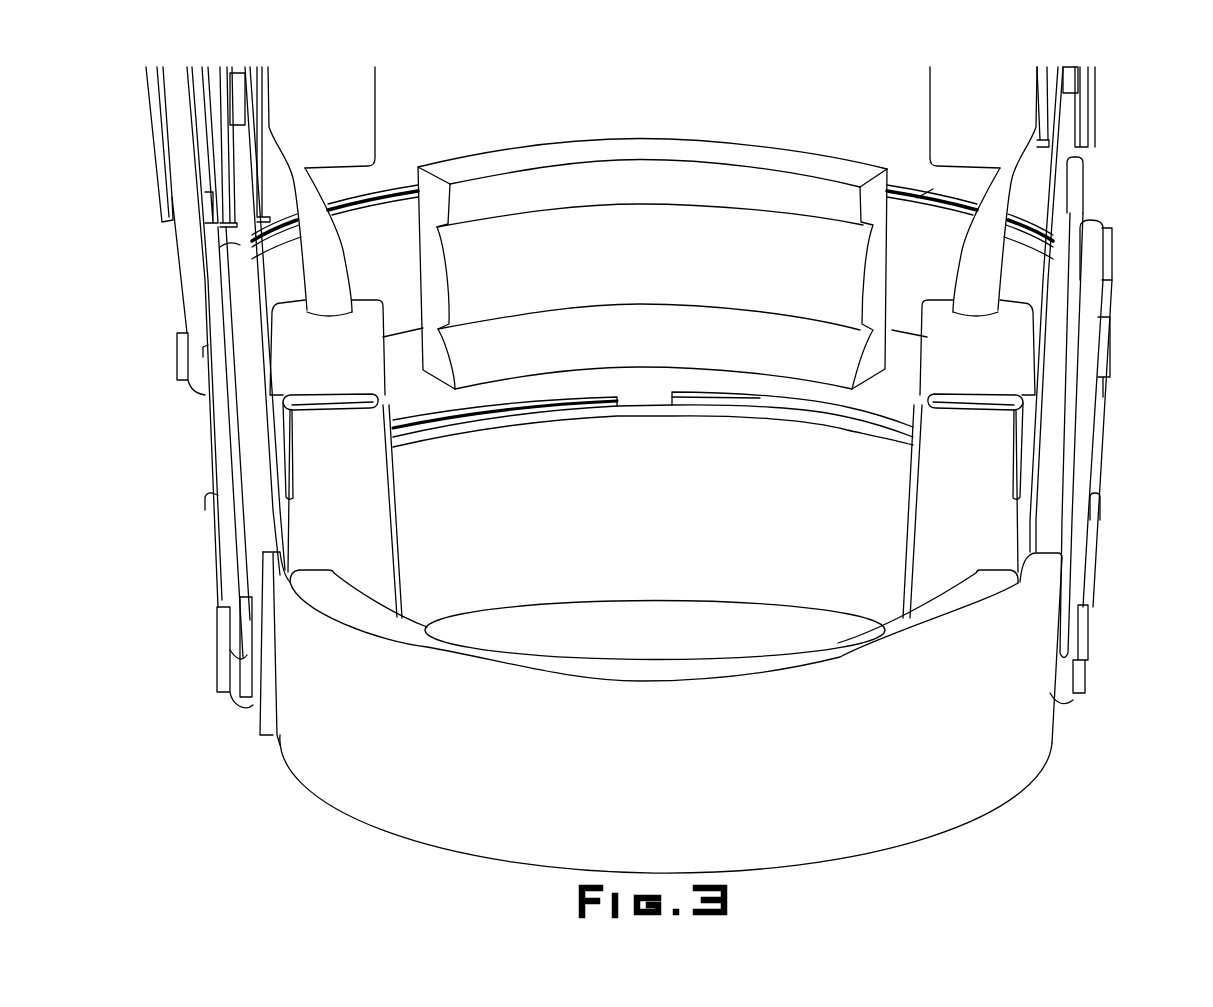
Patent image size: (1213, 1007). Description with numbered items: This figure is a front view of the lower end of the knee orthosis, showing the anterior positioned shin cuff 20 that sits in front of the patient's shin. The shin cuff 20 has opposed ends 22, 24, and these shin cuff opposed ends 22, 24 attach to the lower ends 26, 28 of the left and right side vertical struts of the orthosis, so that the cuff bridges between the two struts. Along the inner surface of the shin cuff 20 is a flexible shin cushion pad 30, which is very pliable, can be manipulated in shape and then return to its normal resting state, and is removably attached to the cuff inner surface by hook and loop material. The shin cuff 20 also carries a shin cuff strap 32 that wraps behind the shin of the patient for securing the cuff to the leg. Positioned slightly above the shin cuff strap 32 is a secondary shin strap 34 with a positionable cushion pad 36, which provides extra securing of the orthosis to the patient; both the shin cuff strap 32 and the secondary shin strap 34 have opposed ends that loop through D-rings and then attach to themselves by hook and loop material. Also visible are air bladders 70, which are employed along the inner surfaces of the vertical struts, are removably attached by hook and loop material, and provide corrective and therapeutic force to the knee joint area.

The shin cuff 20 is at (873, 800).
The shin cuff opposed end 22 is at (267, 737).
The shin cuff opposed end 24 is at (1050, 695).
The lower end of left vertical strut 26 is at (245, 598).
The lower end of right vertical strut 28 is at (1062, 598).
The shin cushion pad 30 is at (507, 657).
The shin cuff strap 32 is at (620, 567).
The secondary shin strap 34 is at (394, 237).
The positionable cushion pad 36 is at (699, 268).
The air bladder 70 is at (345, 128).